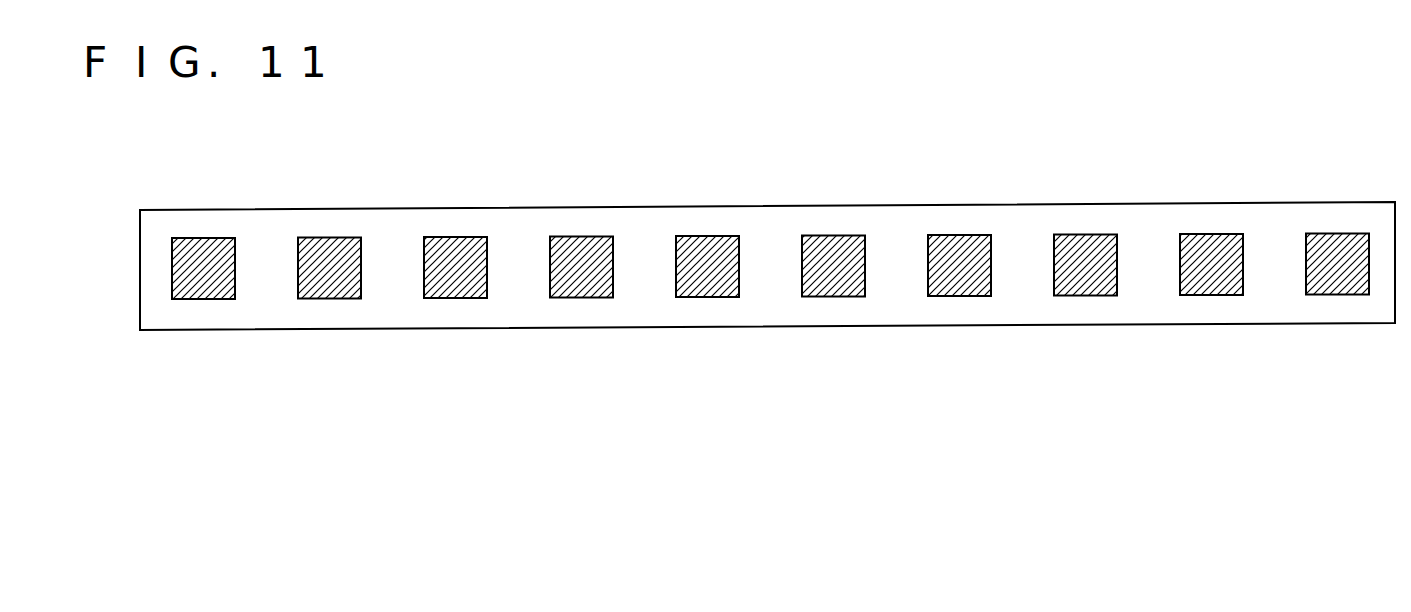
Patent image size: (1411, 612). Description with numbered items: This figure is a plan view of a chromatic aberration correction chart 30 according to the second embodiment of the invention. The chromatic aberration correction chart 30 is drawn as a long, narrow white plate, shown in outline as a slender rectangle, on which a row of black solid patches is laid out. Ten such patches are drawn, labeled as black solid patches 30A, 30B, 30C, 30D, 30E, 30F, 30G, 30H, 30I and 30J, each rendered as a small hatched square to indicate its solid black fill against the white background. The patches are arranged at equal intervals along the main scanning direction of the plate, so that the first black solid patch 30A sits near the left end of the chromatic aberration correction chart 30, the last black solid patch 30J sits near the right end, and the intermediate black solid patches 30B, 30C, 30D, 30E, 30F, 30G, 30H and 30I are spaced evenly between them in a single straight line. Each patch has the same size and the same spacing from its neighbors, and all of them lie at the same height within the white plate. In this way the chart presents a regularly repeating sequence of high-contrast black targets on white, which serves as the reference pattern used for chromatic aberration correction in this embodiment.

The chromatic aberration correction chart 30 is at (1368, 209).
The black solid patch 30A is at (206, 238).
The black solid patch 30B is at (332, 238).
The black solid patch 30C is at (458, 237).
The black solid patch 30D is at (585, 236).
The black solid patch 30E is at (710, 236).
The black solid patch 30F is at (840, 236).
The black solid patch 30G is at (966, 235).
The black solid patch 30H is at (1090, 234).
The black solid patch 30I is at (1211, 234).
The black solid patch 30J is at (1338, 234).